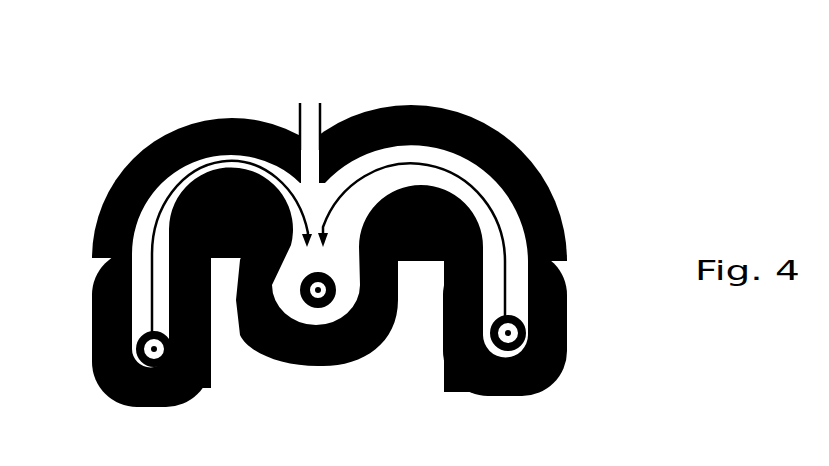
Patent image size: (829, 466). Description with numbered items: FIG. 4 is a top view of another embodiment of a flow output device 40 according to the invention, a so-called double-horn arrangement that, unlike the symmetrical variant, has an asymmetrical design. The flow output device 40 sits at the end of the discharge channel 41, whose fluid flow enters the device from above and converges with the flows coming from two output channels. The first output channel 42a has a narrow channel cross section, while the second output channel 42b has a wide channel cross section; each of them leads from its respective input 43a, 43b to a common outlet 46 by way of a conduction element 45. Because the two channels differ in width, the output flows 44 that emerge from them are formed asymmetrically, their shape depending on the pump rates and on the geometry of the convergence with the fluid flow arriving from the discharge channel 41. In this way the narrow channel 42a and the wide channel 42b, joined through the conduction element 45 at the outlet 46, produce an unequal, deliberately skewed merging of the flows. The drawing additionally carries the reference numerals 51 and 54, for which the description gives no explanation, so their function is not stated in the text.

The flow output device 40 is at (626, 254).
The discharge channel 41 is at (314, 103).
The first output channel 42a is at (115, 177).
The second output channel 42b is at (530, 158).
The input 43a is at (155, 407).
The input 43b is at (512, 393).
The output flows 44 is at (311, 197).
The conduction element 45 is at (296, 298).
The outlet 46 is at (317, 312).
The base 51 is at (419, 449).
The pole sections a,d 54 is at (670, 449).